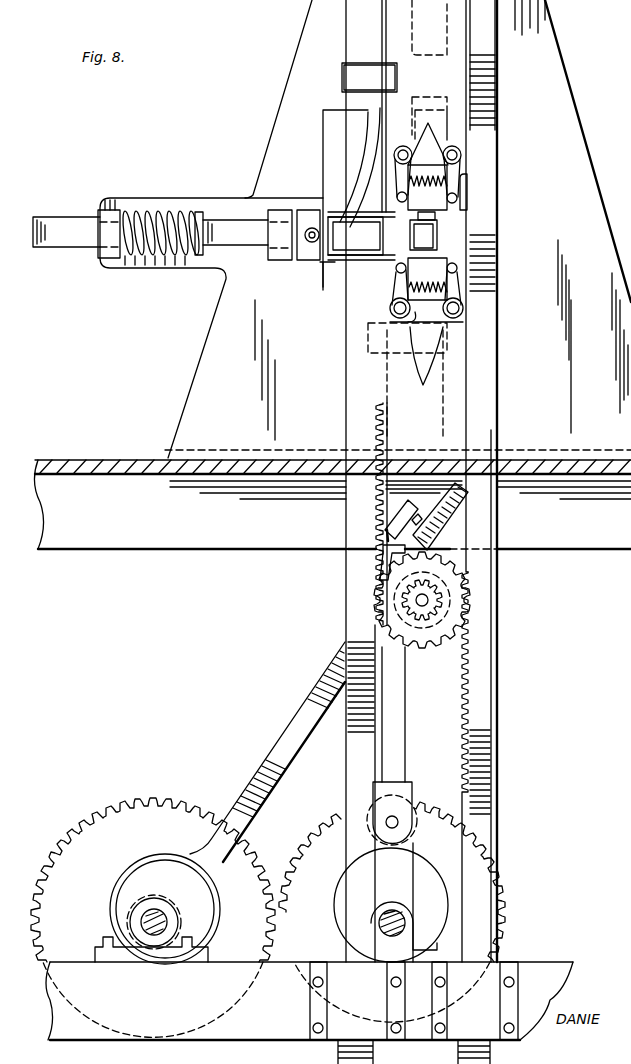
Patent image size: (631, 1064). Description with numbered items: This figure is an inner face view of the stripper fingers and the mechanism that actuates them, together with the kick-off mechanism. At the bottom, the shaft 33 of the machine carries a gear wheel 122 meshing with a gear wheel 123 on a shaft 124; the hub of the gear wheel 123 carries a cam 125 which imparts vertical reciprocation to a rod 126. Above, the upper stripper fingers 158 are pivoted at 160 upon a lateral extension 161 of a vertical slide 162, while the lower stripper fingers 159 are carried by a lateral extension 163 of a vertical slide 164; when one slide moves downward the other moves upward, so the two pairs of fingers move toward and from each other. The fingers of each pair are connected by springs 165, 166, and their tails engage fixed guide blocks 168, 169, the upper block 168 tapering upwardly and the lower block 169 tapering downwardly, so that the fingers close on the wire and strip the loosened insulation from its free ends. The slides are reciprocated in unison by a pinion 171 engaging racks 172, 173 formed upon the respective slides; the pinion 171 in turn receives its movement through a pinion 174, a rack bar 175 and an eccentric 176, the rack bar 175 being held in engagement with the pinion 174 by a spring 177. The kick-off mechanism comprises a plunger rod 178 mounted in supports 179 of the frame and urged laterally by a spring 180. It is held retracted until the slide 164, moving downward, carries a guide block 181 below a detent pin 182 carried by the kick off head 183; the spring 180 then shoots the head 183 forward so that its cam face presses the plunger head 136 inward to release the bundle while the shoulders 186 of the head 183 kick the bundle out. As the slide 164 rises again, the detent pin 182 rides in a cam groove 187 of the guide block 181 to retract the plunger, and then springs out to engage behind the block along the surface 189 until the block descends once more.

The shaft 33 is at (143, 917).
The gear wheel 122 is at (107, 807).
The gear wheel 123 is at (447, 840).
The shaft 124 is at (407, 925).
The cam 125 is at (432, 880).
The rod 126 is at (397, 727).
The head 136 is at (430, 237).
The upper stripper fingers 158 is at (460, 200).
The lower stripper fingers 159 is at (460, 271).
The pivot 160 is at (392, 152).
The lateral extension 161 is at (443, 140).
The vertical slide 162 is at (490, 38).
The lateral extension 163 is at (410, 312).
The vertical slide 164 is at (360, 382).
The spring 165 is at (466, 176).
The spring 166 is at (445, 290).
The guide block 168 is at (447, 205).
The guide block 169 is at (437, 338).
The pinion 171 is at (443, 626).
The rack 172 is at (377, 523).
The rack 173 is at (467, 672).
The pinion 174 is at (443, 602).
The rack bar 175 is at (467, 530).
The eccentric 176 is at (153, 873).
The spring 177 is at (387, 557).
The plunger rod 178 is at (220, 250).
The supports 179 is at (108, 252).
The spring 180 is at (147, 268).
The guide block 181 is at (323, 112).
The detent pin 182 is at (313, 243).
The kick off head 183 is at (323, 268).
The shoulders 186 is at (338, 260).
The cam groove 187 is at (358, 187).
The surface 189 is at (323, 200).